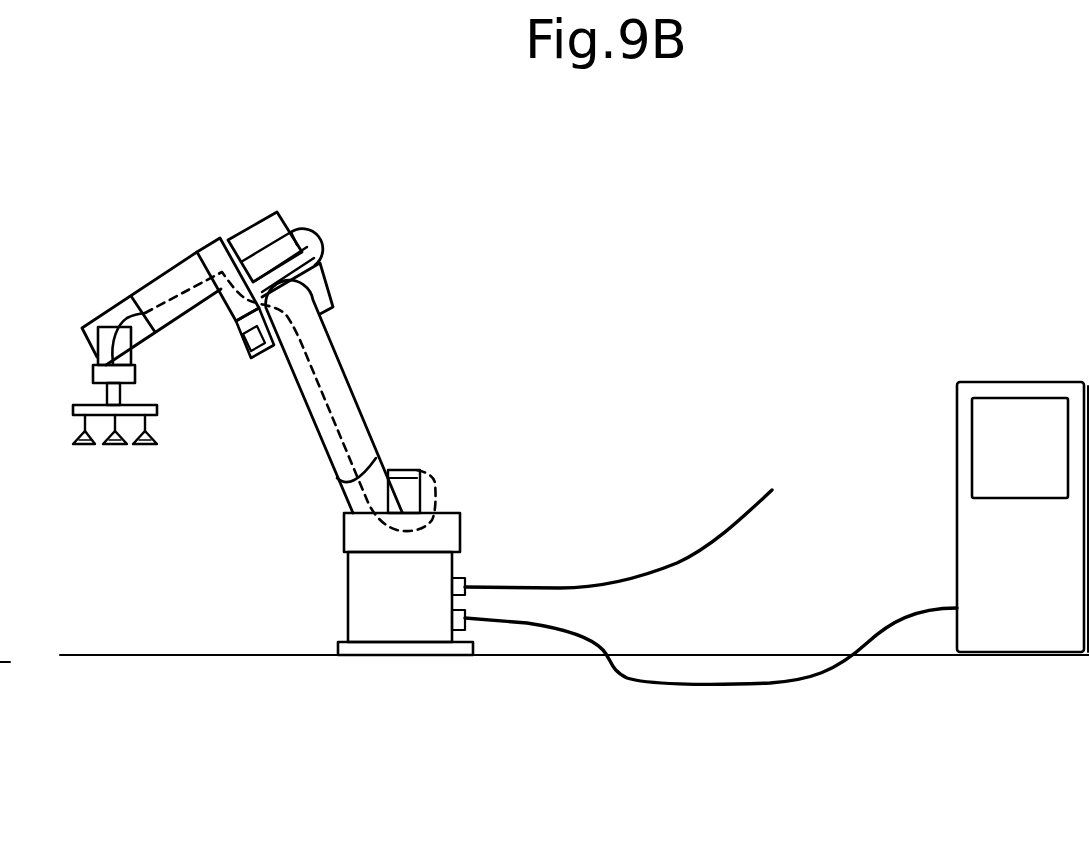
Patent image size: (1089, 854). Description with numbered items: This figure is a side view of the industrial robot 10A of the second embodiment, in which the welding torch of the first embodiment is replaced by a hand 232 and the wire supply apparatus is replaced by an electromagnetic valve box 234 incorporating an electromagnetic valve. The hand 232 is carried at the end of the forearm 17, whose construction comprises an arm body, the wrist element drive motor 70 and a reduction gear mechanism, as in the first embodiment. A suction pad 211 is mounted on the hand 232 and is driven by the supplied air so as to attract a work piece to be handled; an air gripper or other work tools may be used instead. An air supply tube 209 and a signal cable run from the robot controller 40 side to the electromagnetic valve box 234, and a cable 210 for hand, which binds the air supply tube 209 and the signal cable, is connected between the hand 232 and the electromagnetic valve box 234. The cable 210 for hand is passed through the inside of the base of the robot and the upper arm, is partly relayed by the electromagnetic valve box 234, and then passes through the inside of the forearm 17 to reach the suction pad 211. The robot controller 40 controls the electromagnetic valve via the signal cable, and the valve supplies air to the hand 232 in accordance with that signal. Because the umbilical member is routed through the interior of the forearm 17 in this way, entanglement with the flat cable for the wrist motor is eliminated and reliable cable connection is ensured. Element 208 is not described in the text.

The industrial robot 10A is at (412, 690).
The forearm 17 is at (322, 282).
The robot controller 40 is at (1027, 432).
The wrist element drive motor 70 is at (250, 350).
The cable 208 is at (772, 685).
The air supply tube 209 is at (635, 519).
The cable for hand 210 is at (172, 288).
The suction pad 211 is at (115, 447).
The hand 232 is at (125, 448).
The electromagnetic valve box 234 is at (258, 213).